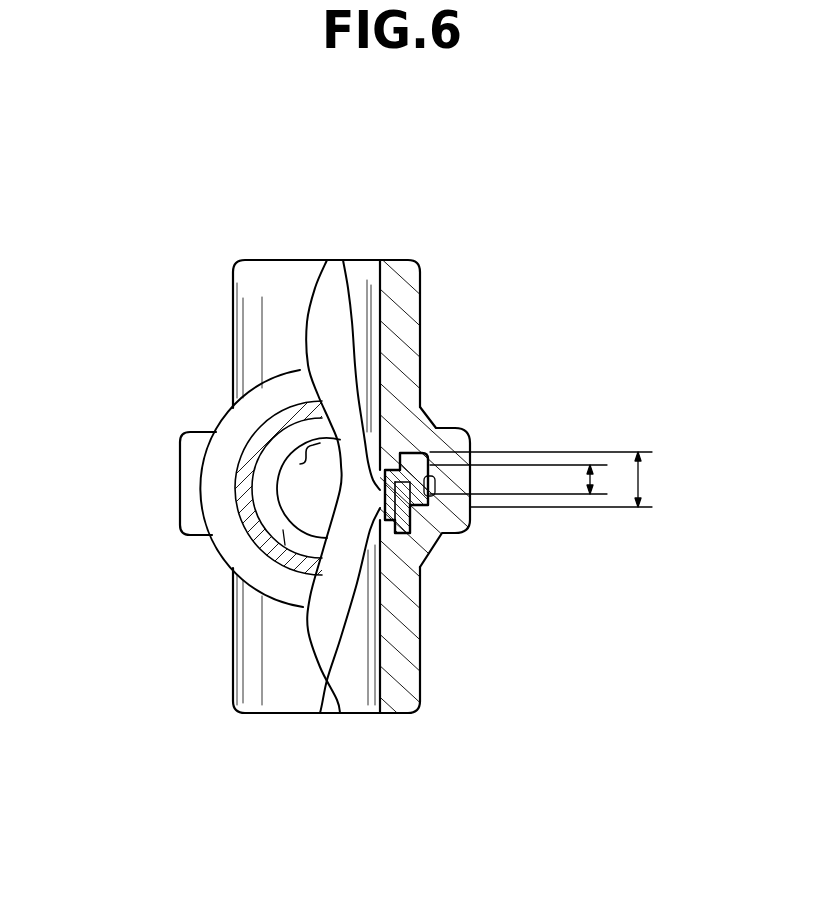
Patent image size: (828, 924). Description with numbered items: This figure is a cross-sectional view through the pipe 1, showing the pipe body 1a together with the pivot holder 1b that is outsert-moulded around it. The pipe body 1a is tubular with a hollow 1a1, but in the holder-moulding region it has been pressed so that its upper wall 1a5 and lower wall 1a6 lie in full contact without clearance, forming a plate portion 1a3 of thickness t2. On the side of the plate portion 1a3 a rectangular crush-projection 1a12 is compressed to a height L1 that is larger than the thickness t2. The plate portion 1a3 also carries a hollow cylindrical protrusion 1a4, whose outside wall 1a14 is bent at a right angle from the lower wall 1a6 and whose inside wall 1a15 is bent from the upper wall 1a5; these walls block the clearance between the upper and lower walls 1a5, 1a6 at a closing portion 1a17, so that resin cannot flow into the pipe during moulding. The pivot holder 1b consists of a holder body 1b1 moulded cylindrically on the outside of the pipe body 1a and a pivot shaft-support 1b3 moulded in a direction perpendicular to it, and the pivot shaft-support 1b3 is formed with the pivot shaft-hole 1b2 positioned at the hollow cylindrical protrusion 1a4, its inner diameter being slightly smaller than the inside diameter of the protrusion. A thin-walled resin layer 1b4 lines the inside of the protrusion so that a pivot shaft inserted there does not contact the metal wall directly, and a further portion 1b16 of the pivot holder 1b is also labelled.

The ball joint 1 is at (272, 411).
The pipe body 1a is at (278, 528).
The hollow 1a1 is at (284, 548).
The plate portion 1a3 is at (388, 460).
The hollow cylindrical protrusion 1a4 is at (437, 537).
The upper wall 1a5 is at (406, 468).
The lower wall 1a6 is at (438, 537).
The crush-projection 1a12 is at (460, 468).
The outside wall 1a14 is at (430, 538).
The inside wall 1a15 is at (320, 713).
The closing portion 1a17 is at (423, 538).
The pivot holder 1b is at (245, 272).
The holder body 1b1 is at (228, 430).
The pivot shaft-hole 1b2 is at (300, 464).
The pivot shaft-support 1b3 is at (402, 265).
The thin-walled resin layer 1b4 is at (380, 495).
The dust cover 1b16 is at (345, 287).
The thickness of the plate portion t2 is at (590, 480).
The height of the crush-projections L1 is at (640, 480).